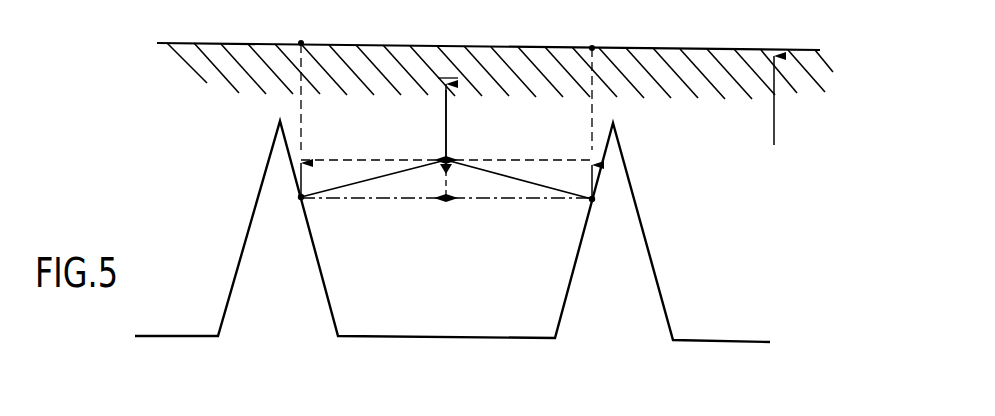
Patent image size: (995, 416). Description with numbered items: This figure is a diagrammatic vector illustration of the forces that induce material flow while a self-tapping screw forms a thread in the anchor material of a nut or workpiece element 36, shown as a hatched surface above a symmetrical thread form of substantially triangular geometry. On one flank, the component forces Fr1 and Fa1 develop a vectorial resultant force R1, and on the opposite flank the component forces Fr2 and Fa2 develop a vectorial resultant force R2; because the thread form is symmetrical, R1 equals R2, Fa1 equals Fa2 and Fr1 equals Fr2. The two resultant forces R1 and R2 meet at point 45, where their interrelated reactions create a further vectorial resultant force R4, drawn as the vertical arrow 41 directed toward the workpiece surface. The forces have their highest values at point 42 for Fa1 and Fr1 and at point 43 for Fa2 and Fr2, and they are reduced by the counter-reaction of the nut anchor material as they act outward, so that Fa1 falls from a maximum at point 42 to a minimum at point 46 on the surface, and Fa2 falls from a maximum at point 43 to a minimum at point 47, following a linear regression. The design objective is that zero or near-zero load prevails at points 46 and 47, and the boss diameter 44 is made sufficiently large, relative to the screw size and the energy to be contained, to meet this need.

The nut or workpiece element 36 is at (174, 104).
The resultant normal force 41 is at (445, 86).
The point of maximum force on first flank 42 is at (300, 198).
The point of maximum force on second flank 43 is at (593, 201).
The boss diameter 44 is at (772, 117).
The point of interrelated reaction 45 is at (447, 160).
The point of minimum force for Fa1 46 is at (301, 43).
The point of minimum force for Fa2 47 is at (592, 48).
The vectorial resultant force R1 is at (360, 180).
The vectorial resultant force R2 is at (530, 182).
The vectorial resultant force R4 is at (446, 105).
The radial component force Fr1 is at (298, 172).
The radial component force Fr2 is at (597, 180).
The axial component force Fa1 is at (392, 199).
The axial component force Fa2 is at (530, 199).